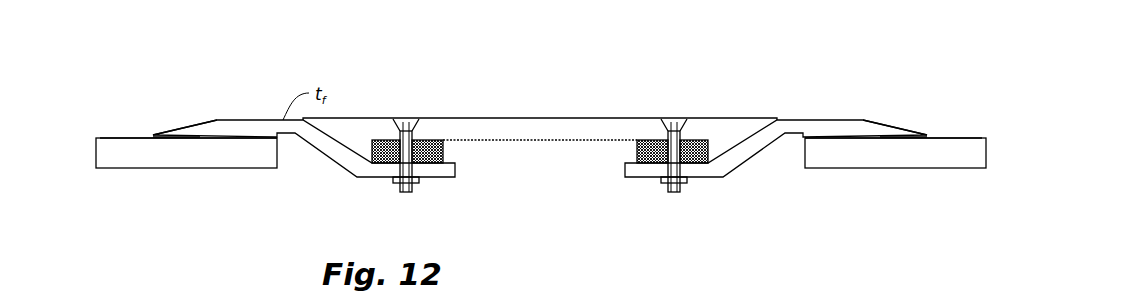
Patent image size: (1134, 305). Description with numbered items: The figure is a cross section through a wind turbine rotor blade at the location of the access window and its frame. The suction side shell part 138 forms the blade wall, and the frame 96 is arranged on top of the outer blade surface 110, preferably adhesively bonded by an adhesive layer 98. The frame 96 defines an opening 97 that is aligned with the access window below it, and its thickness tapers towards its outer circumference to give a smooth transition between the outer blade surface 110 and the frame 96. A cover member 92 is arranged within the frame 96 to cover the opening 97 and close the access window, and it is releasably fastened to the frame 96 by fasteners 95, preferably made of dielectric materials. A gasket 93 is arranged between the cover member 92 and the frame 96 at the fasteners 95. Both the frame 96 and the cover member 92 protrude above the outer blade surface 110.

The cover member 92 is at (592, 130).
The gasket 93 is at (443, 152).
The fastener 95 is at (410, 122).
The frame 96 is at (217, 120).
The opening of frame 97 is at (525, 165).
The adhesive layer 98 is at (163, 133).
The outer blade surface 110 is at (137, 137).
The suction side shell part 138 is at (170, 153).